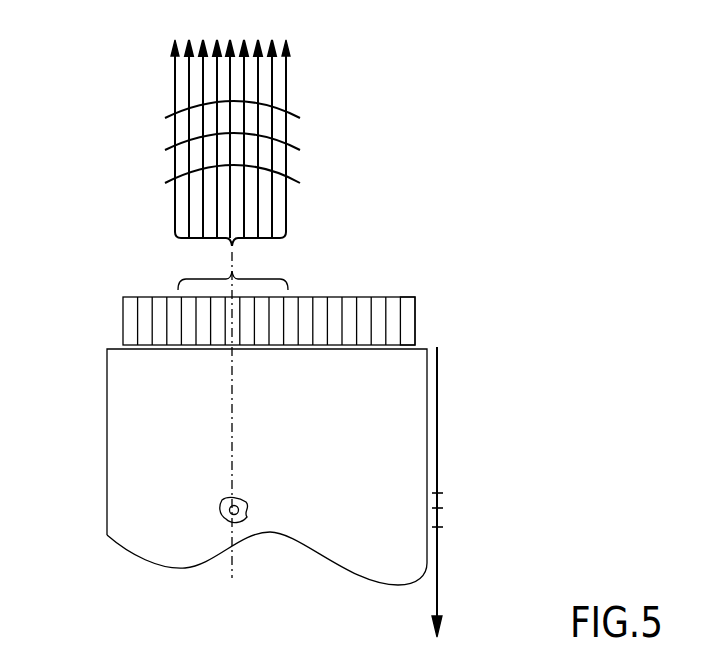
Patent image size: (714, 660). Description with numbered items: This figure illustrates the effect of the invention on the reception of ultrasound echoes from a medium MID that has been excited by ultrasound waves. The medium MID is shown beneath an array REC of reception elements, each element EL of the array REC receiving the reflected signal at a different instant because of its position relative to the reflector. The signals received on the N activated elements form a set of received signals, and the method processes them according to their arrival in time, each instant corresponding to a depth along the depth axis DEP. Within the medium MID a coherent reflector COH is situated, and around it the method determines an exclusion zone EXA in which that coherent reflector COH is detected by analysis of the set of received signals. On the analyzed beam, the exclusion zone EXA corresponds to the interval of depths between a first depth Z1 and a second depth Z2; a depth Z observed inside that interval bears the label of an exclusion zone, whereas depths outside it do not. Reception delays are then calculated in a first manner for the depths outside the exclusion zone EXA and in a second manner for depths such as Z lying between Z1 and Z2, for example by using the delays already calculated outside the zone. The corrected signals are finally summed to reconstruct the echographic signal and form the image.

The array of elements REC is at (121, 290).
The element EL is at (405, 305).
The medium MID is at (130, 408).
The exclusion zone EXA is at (246, 510).
The coherent reflector COH is at (222, 513).
The depth Z1 is at (453, 489).
The depth Z is at (450, 511).
The depth Z2 is at (453, 533).
The depth DEP is at (467, 492).